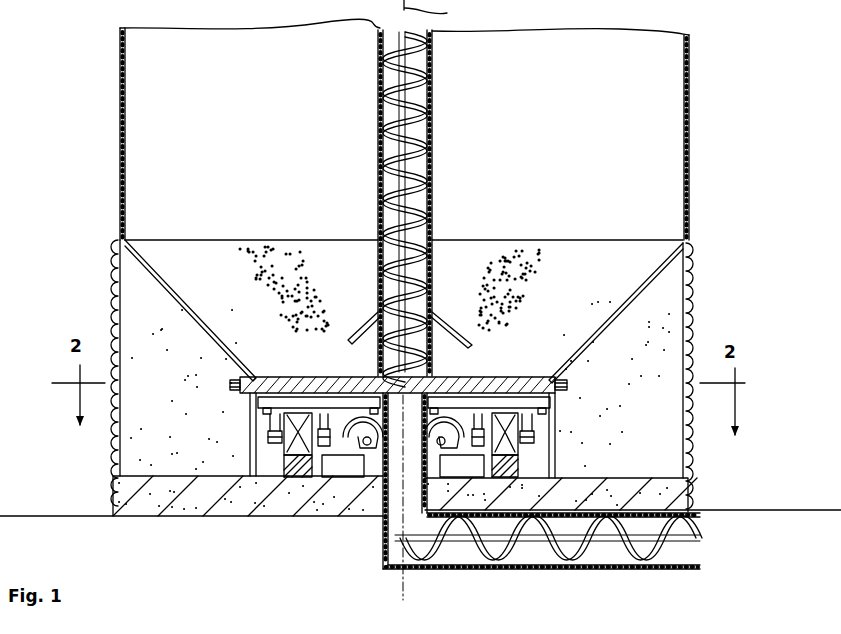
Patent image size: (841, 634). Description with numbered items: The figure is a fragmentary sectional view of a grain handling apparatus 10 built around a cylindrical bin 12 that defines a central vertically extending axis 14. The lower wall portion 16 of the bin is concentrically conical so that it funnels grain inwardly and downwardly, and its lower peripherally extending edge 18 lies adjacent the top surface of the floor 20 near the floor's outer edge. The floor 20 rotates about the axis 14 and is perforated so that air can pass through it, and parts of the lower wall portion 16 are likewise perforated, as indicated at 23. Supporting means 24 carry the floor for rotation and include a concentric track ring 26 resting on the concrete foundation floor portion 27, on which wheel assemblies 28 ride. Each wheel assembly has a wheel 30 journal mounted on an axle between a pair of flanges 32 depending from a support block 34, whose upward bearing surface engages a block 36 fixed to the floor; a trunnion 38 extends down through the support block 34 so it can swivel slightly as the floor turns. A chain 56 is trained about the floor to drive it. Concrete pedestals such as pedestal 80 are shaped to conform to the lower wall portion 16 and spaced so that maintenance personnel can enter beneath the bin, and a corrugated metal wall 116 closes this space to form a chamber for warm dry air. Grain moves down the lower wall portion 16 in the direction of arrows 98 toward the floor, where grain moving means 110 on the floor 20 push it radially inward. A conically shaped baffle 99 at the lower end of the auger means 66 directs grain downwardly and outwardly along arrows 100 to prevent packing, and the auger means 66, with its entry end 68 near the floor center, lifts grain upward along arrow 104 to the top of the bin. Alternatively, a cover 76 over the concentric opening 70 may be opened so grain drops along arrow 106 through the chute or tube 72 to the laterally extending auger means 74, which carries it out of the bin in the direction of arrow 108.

The apparatus 10 is at (713, 150).
The cylindrical bin 12 is at (690, 70).
The vertically extending axis 14 is at (437, 12).
The lower wall portion 16 is at (655, 263).
The lower peripherally extending edge 18 is at (246, 401).
The floor 20 is at (304, 390).
The perforations 23 is at (266, 245).
The floor supporting means 24 is at (600, 447).
The track ring 26 is at (298, 478).
The floor portion 27 is at (608, 486).
The wheel assemblies 28 is at (262, 449).
The wheel 30 is at (282, 449).
The flanges 32 is at (268, 431).
The support block 34 is at (268, 405).
The block 36 is at (326, 400).
The trunnion 38 is at (258, 437).
The chain 56 is at (567, 386).
The auger means 66 is at (437, 196).
The entry end 68 is at (426, 378).
The concentric opening 70 is at (384, 390).
The chute or tube 72 is at (388, 569).
The laterally extending auger means 74 is at (528, 580).
The cover 76 is at (393, 472).
The pedestal 80 is at (662, 363).
The arrows 98 is at (225, 306).
The conically shaped baffle 99 is at (470, 345).
The arrows 100 is at (365, 320).
The arrow 104 is at (352, 165).
The arrow 106 is at (383, 472).
The arrow 108 is at (632, 580).
The grain moving means 110 is at (291, 356).
The corrugated metal wall 116 is at (116, 277).